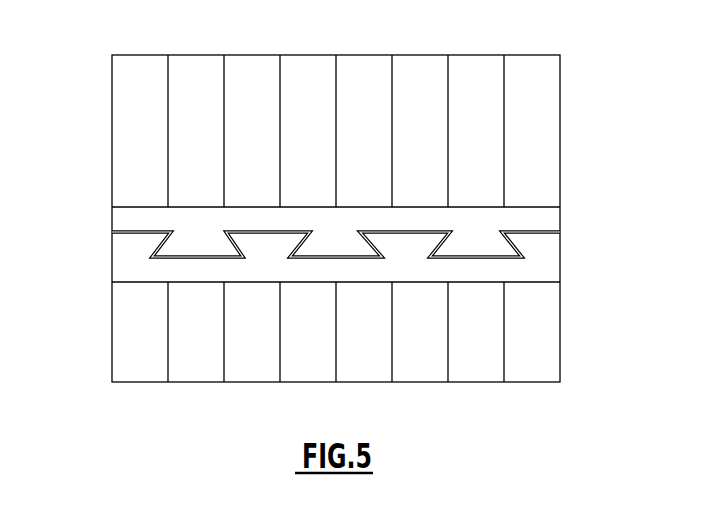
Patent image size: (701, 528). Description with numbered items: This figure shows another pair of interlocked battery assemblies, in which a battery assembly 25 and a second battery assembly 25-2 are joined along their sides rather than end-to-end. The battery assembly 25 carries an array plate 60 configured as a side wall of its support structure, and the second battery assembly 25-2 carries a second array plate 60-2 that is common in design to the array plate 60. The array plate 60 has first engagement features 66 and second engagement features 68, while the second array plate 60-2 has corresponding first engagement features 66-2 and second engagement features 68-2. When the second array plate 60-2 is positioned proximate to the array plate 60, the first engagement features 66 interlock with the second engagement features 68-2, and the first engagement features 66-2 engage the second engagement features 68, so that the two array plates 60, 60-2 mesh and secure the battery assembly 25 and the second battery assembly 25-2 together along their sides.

The battery assembly 25 is at (128, 121).
The second battery assembly 25-2 is at (156, 346).
The array plate 60 is at (126, 219).
The second array plate 60-2 is at (126, 273).
The first engagement features 66 is at (210, 245).
The second engagement features 68 is at (153, 230).
The first engagement features 66-2 is at (130, 245).
The second engagement features 68-2 is at (187, 258).